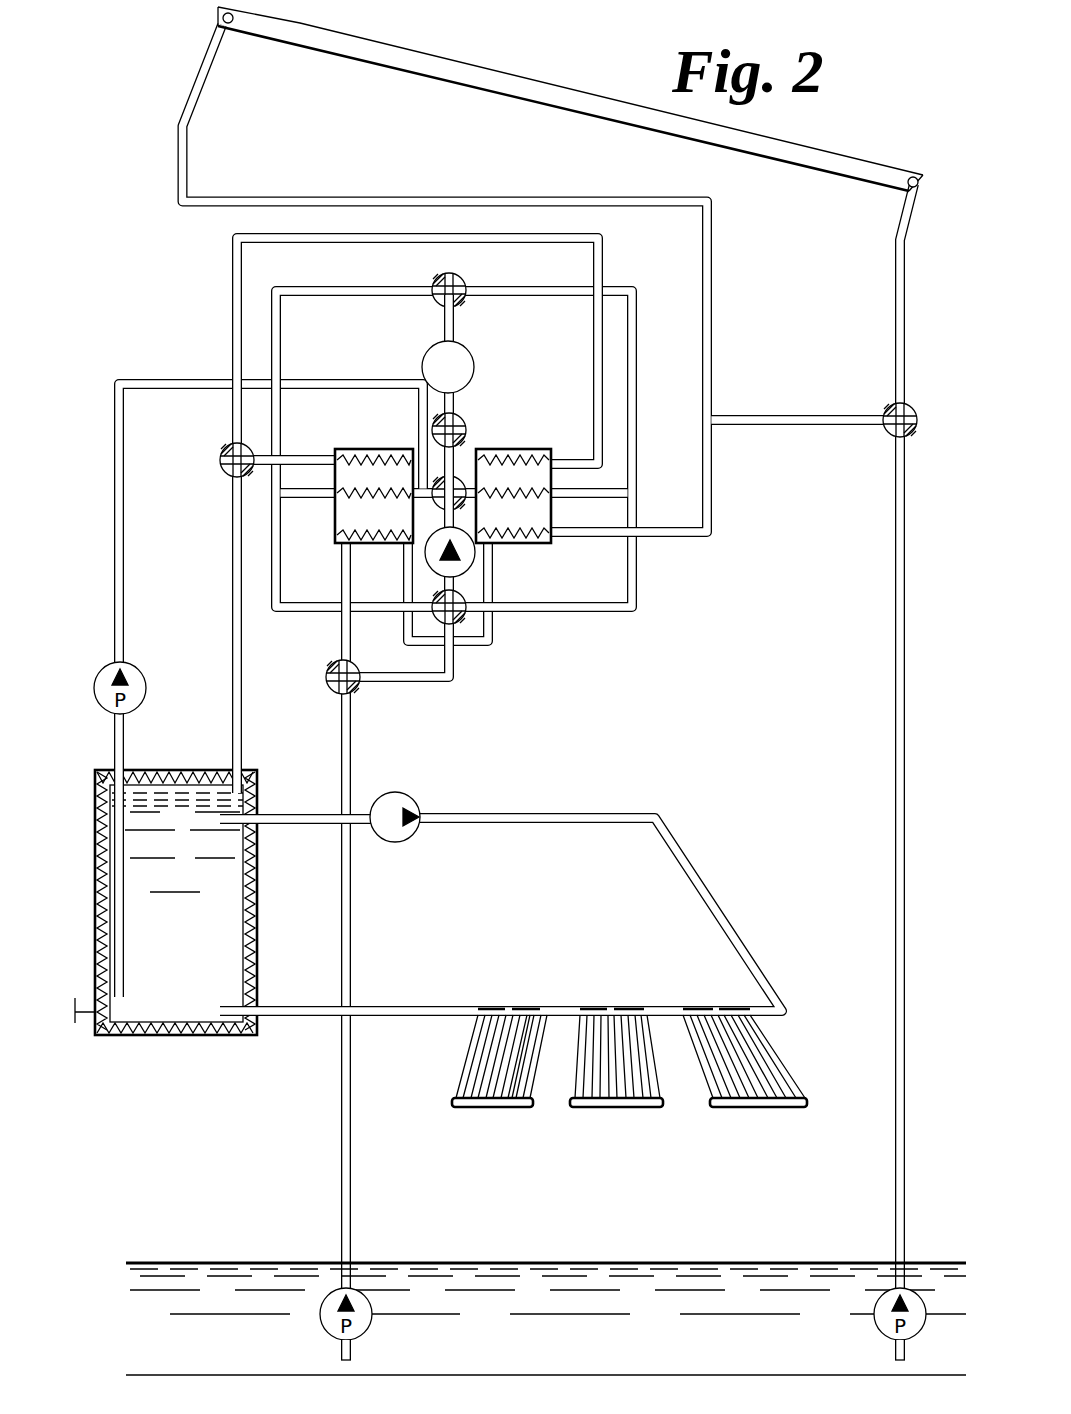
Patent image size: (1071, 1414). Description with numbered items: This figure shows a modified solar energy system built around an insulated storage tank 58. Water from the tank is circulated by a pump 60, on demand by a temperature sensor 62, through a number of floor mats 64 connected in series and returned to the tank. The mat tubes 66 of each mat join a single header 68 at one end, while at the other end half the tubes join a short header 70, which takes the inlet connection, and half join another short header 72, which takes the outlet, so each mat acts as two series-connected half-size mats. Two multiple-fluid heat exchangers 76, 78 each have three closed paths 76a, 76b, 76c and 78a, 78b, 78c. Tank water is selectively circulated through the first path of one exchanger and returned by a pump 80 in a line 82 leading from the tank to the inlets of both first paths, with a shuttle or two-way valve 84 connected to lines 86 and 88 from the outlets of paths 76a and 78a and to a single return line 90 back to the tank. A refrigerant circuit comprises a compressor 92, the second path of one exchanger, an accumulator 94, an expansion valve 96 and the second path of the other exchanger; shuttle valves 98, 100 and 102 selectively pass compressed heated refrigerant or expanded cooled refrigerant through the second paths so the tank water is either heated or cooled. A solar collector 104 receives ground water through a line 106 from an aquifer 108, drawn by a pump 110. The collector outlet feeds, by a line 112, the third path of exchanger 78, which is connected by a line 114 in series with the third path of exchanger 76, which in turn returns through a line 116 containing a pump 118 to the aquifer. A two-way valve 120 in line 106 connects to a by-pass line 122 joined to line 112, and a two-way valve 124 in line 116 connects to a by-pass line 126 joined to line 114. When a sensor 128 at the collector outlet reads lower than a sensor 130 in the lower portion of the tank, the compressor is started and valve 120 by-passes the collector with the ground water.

The insulated storage tank 58 is at (258, 912).
The pump 60 is at (418, 800).
The temperature sensor 62 is at (800, 998).
The floor mat 64 is at (589, 1081).
The mat tube 66 is at (487, 1050).
The single header 68 is at (472, 1108).
The short header 70 is at (524, 1010).
The short header 72 is at (480, 1006).
The multiple-fluid heat exchanger 76 is at (373, 481).
The first path 76a is at (380, 456).
The second path 76b is at (346, 483).
The third path 76c is at (374, 521).
The multiple-fluid heat exchanger 78 is at (541, 495).
The first path 78a is at (555, 470).
The second path 78b is at (555, 503).
The third path 78c is at (515, 545).
The pump 80 is at (147, 698).
The line 82 is at (123, 580).
The shuttle or two-way valve 84 is at (222, 463).
The line 86 is at (300, 455).
The line 88 is at (230, 311).
The return line 90 is at (243, 672).
The compressor 92 is at (430, 560).
The accumulator 94 is at (468, 350).
The expansion valve 96 is at (466, 424).
The shuttle or two-way valve 98 is at (455, 620).
The shuttle or two-way valve 100 is at (440, 505).
The shuttle or two-way valve 102 is at (462, 284).
The solar collector 104 is at (505, 68).
The line 106 is at (893, 680).
The aquifer 108 is at (645, 1300).
The pump 110 is at (874, 1320).
The line 112 is at (720, 312).
The line 114 is at (487, 633).
The line 116 is at (340, 572).
The pump 118 is at (365, 1328).
The two-way valve 120 is at (909, 409).
The by-pass line 122 is at (745, 428).
The two-way valve 124 is at (326, 683).
The by-pass line 126 is at (428, 683).
The sensor 128 is at (207, 18).
The sensor 130 is at (75, 1012).